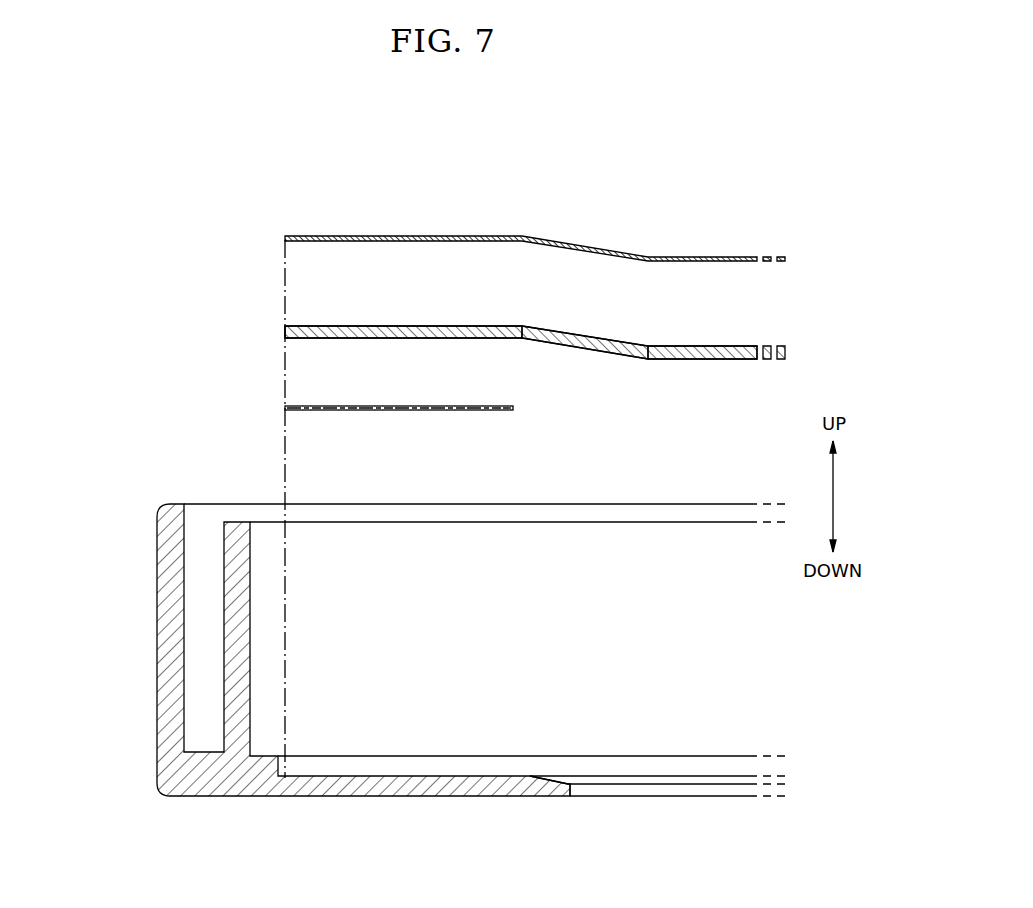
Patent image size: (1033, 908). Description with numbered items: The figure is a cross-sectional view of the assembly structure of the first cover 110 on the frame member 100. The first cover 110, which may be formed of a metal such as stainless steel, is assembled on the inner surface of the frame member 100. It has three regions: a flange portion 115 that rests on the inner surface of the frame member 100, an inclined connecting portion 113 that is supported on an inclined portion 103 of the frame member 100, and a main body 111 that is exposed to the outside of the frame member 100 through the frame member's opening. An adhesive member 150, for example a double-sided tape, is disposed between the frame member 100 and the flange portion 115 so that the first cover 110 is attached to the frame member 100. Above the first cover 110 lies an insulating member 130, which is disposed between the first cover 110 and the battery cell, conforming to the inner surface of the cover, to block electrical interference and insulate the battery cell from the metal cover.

The frame member 100 is at (148, 670).
The inclined portion 103 is at (553, 776).
The first cover 110 is at (272, 328).
The main body 111 is at (700, 361).
The connecting portion 113 is at (586, 352).
The flange portion 115 is at (418, 339).
The insulating member 130 is at (272, 238).
The adhesive member 150 is at (272, 408).